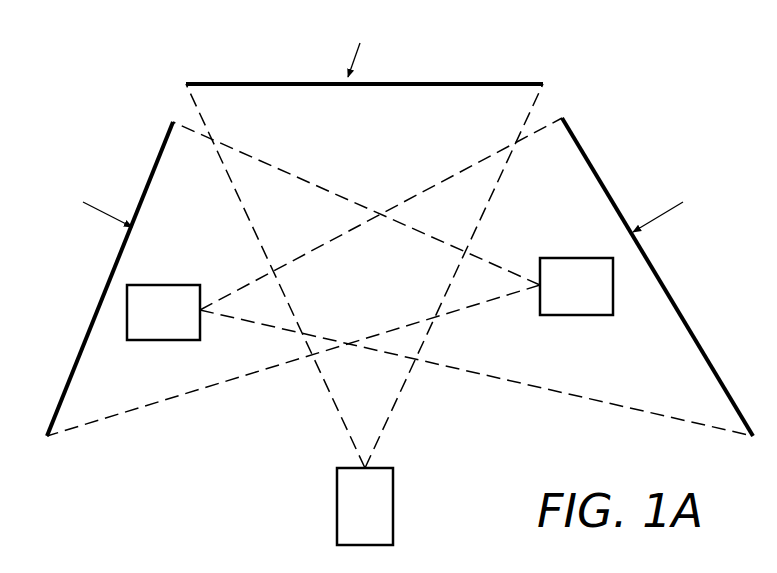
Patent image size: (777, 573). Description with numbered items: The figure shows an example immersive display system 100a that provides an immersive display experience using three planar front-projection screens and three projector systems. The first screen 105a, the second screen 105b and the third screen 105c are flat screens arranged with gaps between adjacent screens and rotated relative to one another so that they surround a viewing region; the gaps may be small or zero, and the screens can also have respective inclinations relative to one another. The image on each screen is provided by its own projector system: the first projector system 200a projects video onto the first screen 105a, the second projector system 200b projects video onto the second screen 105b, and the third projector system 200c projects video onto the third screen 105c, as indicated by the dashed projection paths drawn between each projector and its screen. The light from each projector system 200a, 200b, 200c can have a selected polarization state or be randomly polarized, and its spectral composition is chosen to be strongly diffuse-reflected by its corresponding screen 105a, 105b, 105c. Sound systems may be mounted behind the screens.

The immersive display system 100a is at (607, 83).
The screen 1 105a is at (110, 278).
The screen 2 105b is at (417, 84).
The screen 3 105c is at (664, 285).
The projector system P1 200a is at (592, 273).
The projector system P2 200b is at (352, 533).
The projector system P3 200c is at (159, 293).